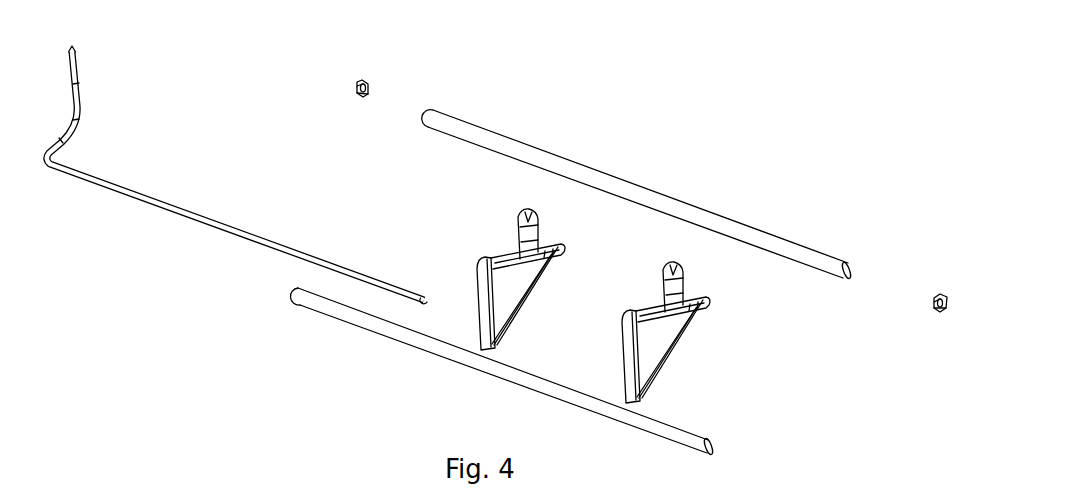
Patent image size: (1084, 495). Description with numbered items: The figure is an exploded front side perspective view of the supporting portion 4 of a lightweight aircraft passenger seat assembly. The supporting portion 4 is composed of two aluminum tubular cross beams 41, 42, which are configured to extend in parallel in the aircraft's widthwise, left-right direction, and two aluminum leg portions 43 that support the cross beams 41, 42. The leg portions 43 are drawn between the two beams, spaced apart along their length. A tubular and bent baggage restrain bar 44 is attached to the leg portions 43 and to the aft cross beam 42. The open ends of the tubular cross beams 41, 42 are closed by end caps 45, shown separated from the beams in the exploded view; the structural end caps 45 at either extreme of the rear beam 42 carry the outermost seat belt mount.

The supporting portion 4 is at (587, 119).
The cross beam 41 is at (300, 303).
The aft cross beam 42 is at (468, 118).
The leg portion 43 is at (478, 278).
The baggage restrain bar 44 is at (240, 230).
The end cap 45 is at (356, 97).